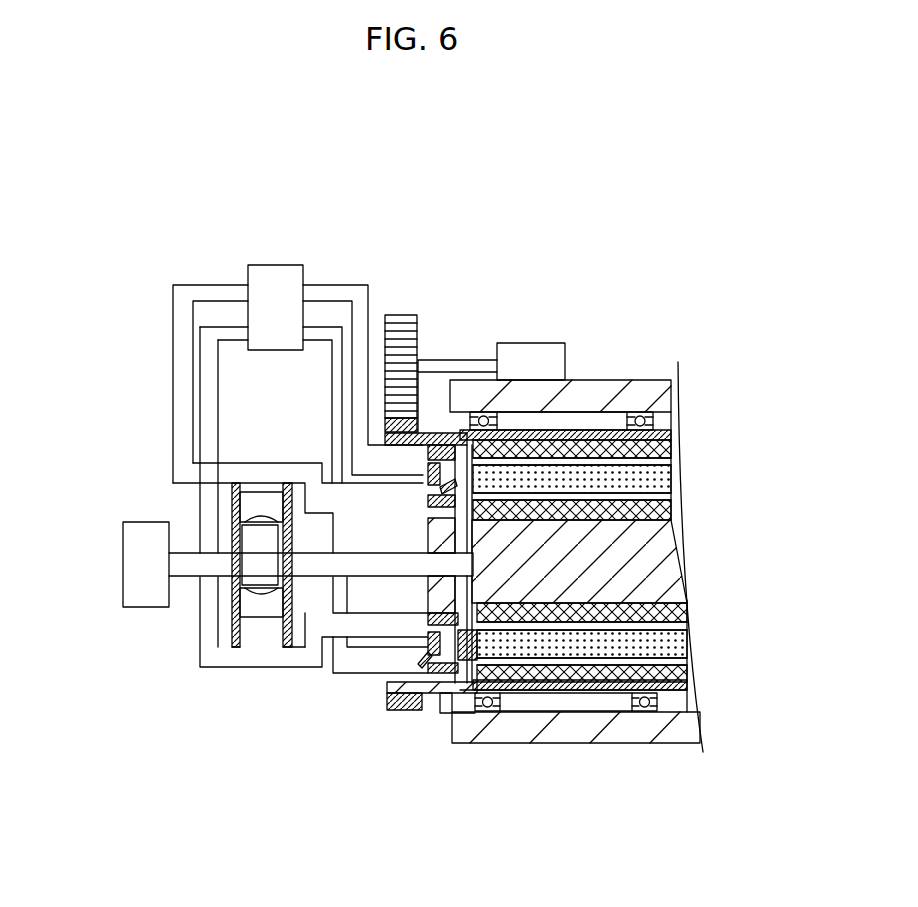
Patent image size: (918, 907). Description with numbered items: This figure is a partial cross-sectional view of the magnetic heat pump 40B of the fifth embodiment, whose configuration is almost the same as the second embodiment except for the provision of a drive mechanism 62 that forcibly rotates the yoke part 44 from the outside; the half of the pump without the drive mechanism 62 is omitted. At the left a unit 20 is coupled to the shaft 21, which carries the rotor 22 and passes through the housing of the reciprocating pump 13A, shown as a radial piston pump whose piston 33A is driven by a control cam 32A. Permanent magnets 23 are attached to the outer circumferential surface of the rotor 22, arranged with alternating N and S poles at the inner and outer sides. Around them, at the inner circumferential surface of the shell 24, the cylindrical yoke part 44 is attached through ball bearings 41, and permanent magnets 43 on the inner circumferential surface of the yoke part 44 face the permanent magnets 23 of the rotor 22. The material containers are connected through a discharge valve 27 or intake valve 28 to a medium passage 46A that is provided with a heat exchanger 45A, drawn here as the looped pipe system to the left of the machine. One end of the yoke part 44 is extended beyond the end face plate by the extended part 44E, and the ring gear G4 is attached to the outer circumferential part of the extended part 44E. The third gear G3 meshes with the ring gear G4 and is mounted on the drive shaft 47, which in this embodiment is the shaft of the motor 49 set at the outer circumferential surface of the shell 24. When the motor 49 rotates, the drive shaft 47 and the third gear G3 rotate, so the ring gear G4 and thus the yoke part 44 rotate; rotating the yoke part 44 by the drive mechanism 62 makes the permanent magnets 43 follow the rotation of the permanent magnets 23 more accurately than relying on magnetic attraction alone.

The engine / prime mover 20 is at (145, 608).
The shaft 21 is at (368, 562).
The rotor 22 is at (537, 603).
The permanent magnets 23 is at (577, 600).
The shell 24 is at (653, 727).
The discharge valve 27 is at (420, 462).
The intake valve 28 is at (443, 447).
The control cam 32A is at (238, 615).
The piston 33A is at (270, 605).
The reciprocating pump 13A is at (278, 699).
The magnetic heat pump 40B is at (657, 321).
The ball bearings 41 is at (530, 385).
The permanent magnets 43 is at (510, 600).
The yoke part 44 is at (572, 440).
The extended part 44E is at (443, 692).
The heat exchanger 45A is at (285, 265).
The medium passage 46A is at (218, 405).
The drive shaft 47 is at (460, 360).
The motor 49 is at (518, 343).
The drive mechanism 62 is at (465, 226).
The third gear G3 is at (400, 315).
The ring gear G4 is at (402, 712).